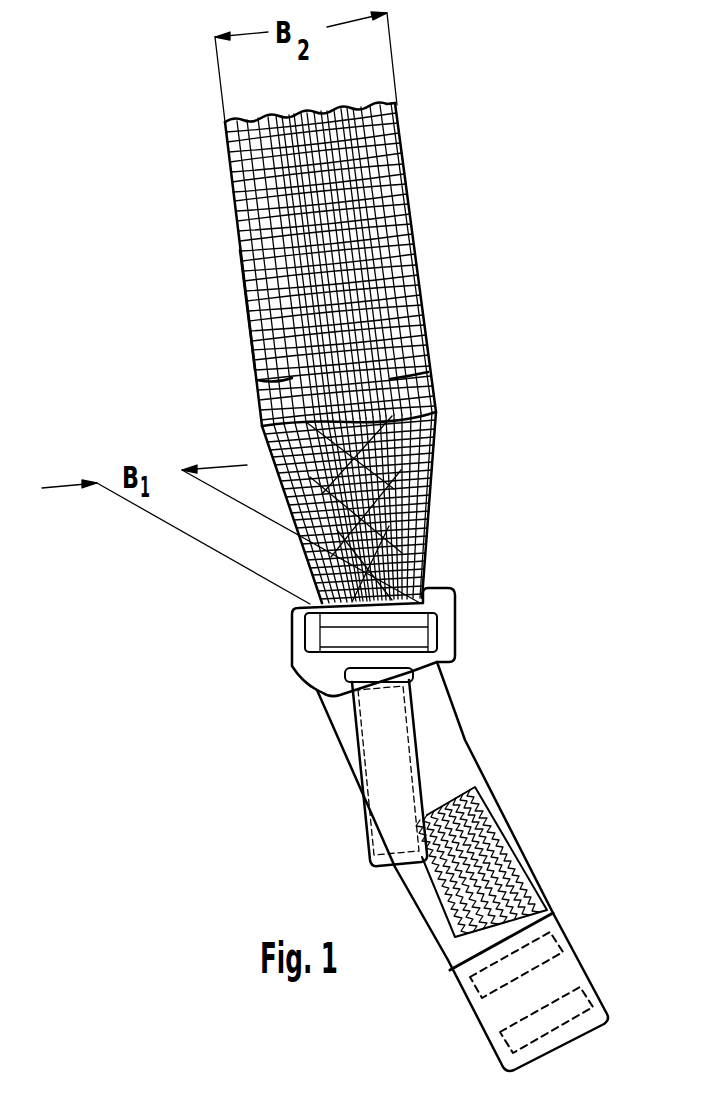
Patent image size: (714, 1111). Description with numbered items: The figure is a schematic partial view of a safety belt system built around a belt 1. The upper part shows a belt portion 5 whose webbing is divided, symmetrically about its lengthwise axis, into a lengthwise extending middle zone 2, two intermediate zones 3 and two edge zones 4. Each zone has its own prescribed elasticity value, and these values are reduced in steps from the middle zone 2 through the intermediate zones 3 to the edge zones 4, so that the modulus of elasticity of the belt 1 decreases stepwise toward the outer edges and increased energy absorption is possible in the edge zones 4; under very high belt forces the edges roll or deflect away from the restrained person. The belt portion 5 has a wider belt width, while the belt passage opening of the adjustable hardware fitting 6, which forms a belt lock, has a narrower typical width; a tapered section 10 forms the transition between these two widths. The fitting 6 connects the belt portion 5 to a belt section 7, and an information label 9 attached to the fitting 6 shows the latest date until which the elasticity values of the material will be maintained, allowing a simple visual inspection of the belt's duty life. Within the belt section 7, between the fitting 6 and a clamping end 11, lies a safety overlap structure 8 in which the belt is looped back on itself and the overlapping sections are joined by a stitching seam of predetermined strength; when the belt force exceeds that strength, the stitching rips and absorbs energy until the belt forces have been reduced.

The belt 1 is at (452, 201).
The middle zone 2 is at (318, 172).
The intermediate zones 3 is at (268, 212).
The edge zones 4 is at (260, 377).
The belt portion 5 is at (236, 312).
The hardware fitting 6 is at (455, 612).
The belt section 7 is at (490, 778).
The safety overlap structure 8 is at (520, 852).
The information label 9 is at (368, 832).
The tapered section 10 is at (467, 584).
The clamping end 11 is at (567, 962).